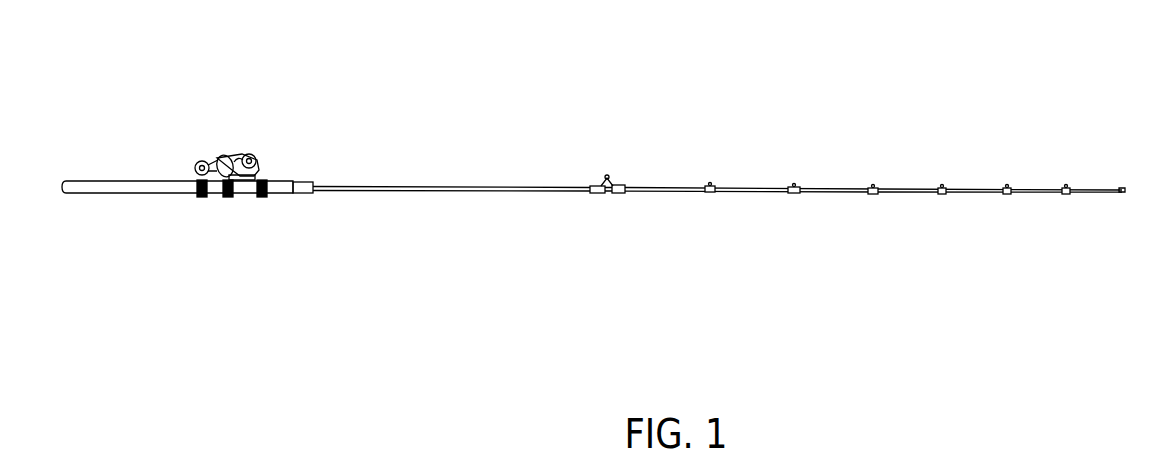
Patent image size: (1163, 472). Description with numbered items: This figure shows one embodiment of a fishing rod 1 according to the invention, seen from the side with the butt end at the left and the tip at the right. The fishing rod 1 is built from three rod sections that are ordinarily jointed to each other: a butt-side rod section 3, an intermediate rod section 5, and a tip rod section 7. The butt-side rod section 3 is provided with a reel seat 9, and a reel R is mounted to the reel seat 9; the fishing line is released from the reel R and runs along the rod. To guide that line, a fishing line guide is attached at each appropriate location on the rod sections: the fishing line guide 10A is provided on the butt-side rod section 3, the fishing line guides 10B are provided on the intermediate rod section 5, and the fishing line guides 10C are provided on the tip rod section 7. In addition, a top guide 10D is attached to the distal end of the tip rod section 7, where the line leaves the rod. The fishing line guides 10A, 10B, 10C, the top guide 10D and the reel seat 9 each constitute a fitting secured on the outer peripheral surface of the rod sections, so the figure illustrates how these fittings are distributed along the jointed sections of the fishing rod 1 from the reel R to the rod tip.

The fishing rod 1 is at (592, 139).
The butt-side rod section 3 is at (391, 193).
The intermediate rod section 5 is at (744, 194).
The tip rod section 7 is at (913, 194).
The reel seat 9 is at (266, 176).
The reel R is at (232, 149).
The fishing line guide 10A is at (611, 163).
The fishing line guide 10B is at (713, 183).
The fishing line guide 10C is at (943, 186).
The top guide 10D is at (1122, 188).